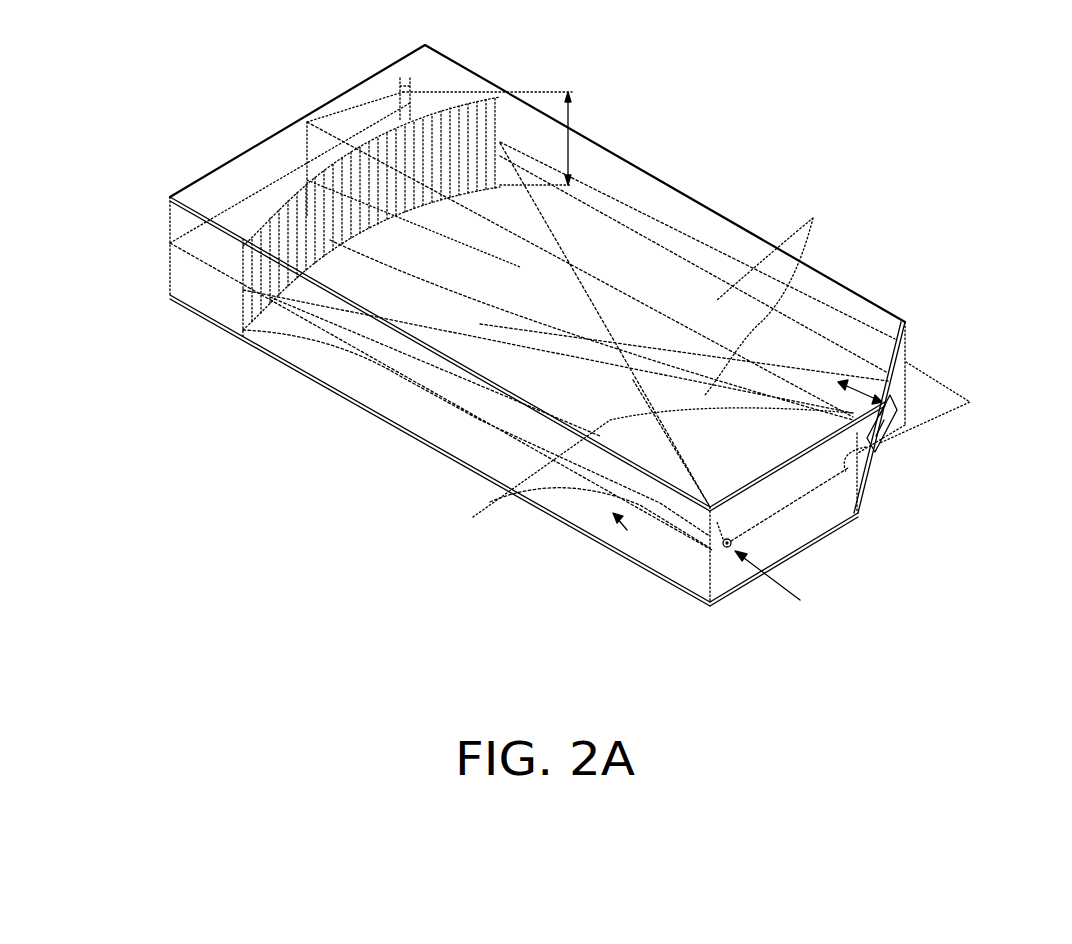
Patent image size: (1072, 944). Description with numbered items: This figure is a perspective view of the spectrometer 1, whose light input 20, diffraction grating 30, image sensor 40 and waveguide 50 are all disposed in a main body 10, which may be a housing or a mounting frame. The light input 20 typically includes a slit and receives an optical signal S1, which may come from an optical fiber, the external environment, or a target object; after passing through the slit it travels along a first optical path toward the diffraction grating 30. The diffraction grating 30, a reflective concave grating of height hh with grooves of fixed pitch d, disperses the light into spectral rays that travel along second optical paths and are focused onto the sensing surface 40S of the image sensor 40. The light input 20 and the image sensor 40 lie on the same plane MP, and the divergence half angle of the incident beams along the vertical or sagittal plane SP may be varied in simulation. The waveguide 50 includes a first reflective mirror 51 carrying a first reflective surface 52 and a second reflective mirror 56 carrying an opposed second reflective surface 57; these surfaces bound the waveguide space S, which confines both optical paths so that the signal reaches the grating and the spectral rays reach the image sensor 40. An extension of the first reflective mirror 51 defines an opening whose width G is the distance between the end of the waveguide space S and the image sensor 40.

The spectrometer 1 is at (742, 166).
The main body 10 is at (170, 267).
The light input 20 is at (727, 549).
The diffraction grating 30 is at (307, 180).
The image sensor 40 is at (878, 426).
The sensing surface 40S is at (870, 468).
The waveguide 50 is at (330, 485).
The first reflective mirror 51 is at (407, 340).
The first reflective surface 52 is at (782, 497).
The second reflective mirror 56 is at (333, 390).
The second reflective surface 57 is at (800, 533).
The pitch d is at (400, 77).
The height hh is at (502, 138).
The width of the opening G is at (860, 382).
The plane MP is at (945, 388).
The sagittal plane SP is at (873, 487).
The waveguide space S is at (632, 535).
The optical signal S1 is at (783, 585).